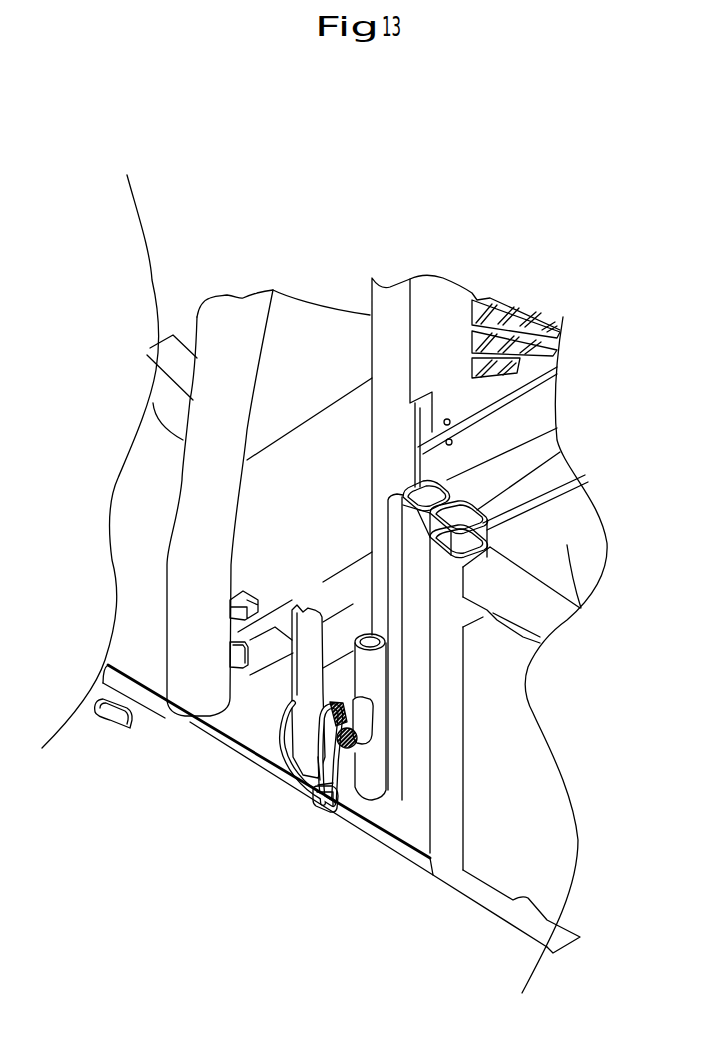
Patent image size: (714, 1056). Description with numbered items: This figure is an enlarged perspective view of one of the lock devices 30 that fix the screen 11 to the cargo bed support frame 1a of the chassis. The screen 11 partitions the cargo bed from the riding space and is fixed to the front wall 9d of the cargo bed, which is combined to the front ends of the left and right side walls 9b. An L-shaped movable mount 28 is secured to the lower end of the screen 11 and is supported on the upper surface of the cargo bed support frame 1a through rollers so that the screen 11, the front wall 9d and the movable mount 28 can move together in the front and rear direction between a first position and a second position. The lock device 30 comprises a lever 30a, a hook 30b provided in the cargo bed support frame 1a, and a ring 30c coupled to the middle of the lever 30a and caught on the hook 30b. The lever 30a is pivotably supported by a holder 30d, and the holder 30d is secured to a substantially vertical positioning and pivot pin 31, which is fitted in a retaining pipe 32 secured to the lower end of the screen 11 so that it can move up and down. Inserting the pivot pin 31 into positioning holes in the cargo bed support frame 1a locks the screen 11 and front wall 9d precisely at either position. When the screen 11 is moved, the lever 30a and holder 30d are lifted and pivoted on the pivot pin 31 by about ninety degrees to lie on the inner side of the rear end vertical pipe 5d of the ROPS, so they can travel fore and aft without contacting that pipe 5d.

The cargo bed support frame 1a is at (172, 717).
The rear end vertical pipe 5d is at (205, 473).
The side wall 9b is at (523, 820).
The front wall 9d is at (508, 417).
The screen 11 is at (435, 312).
The movable mount 28 is at (342, 587).
The lock device 30 is at (264, 785).
The lever 30a is at (308, 625).
The hook 30b is at (320, 787).
The ring 30c is at (317, 772).
The holder 30d is at (377, 812).
The pivot pin 31 is at (363, 717).
The retaining pipe 32 is at (377, 677).